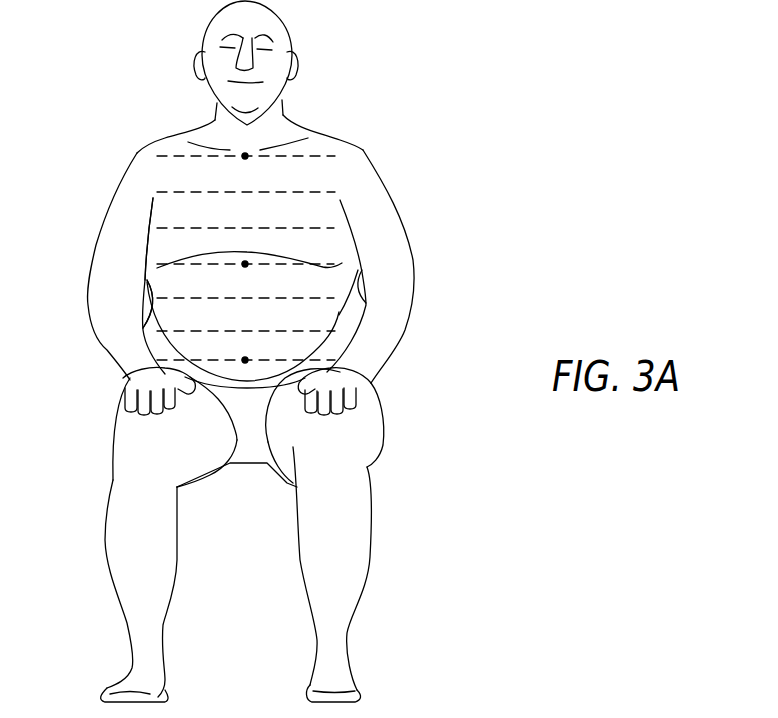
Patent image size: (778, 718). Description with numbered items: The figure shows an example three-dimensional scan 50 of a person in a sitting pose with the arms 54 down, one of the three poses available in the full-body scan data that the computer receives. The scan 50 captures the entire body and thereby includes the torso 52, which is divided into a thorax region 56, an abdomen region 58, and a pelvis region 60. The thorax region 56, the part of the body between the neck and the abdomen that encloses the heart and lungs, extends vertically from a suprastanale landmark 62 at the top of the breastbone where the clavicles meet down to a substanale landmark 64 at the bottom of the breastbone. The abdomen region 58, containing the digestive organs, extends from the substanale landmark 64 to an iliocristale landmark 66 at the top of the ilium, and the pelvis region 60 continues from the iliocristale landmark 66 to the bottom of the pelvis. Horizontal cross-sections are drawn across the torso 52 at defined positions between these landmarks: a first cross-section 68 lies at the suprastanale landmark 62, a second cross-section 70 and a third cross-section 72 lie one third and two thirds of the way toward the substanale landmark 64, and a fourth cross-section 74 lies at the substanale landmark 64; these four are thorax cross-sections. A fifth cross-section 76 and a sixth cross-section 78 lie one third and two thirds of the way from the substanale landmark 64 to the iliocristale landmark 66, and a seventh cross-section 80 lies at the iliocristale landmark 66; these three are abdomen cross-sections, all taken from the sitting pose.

The 3-dimensional scan 50 is at (502, 60).
The torso 52 is at (362, 290).
The arm 54 is at (105, 348).
The thorax region 56 is at (151, 217).
The abdomen region 58 is at (153, 303).
The pelvis region 60 is at (383, 448).
The suprastanale landmark 62 is at (245, 156).
The substanale landmark 64 is at (245, 264).
The iliocristale landmark 66 is at (245, 360).
The first cross-section 68 is at (320, 155).
The second cross-section 70 is at (334, 192).
The third cross-section 72 is at (332, 228).
The fourth cross-section 74 is at (333, 264).
The fifth cross-section 76 is at (331, 298).
The sixth cross-section 78 is at (333, 331).
The seventh cross-section 80 is at (333, 360).